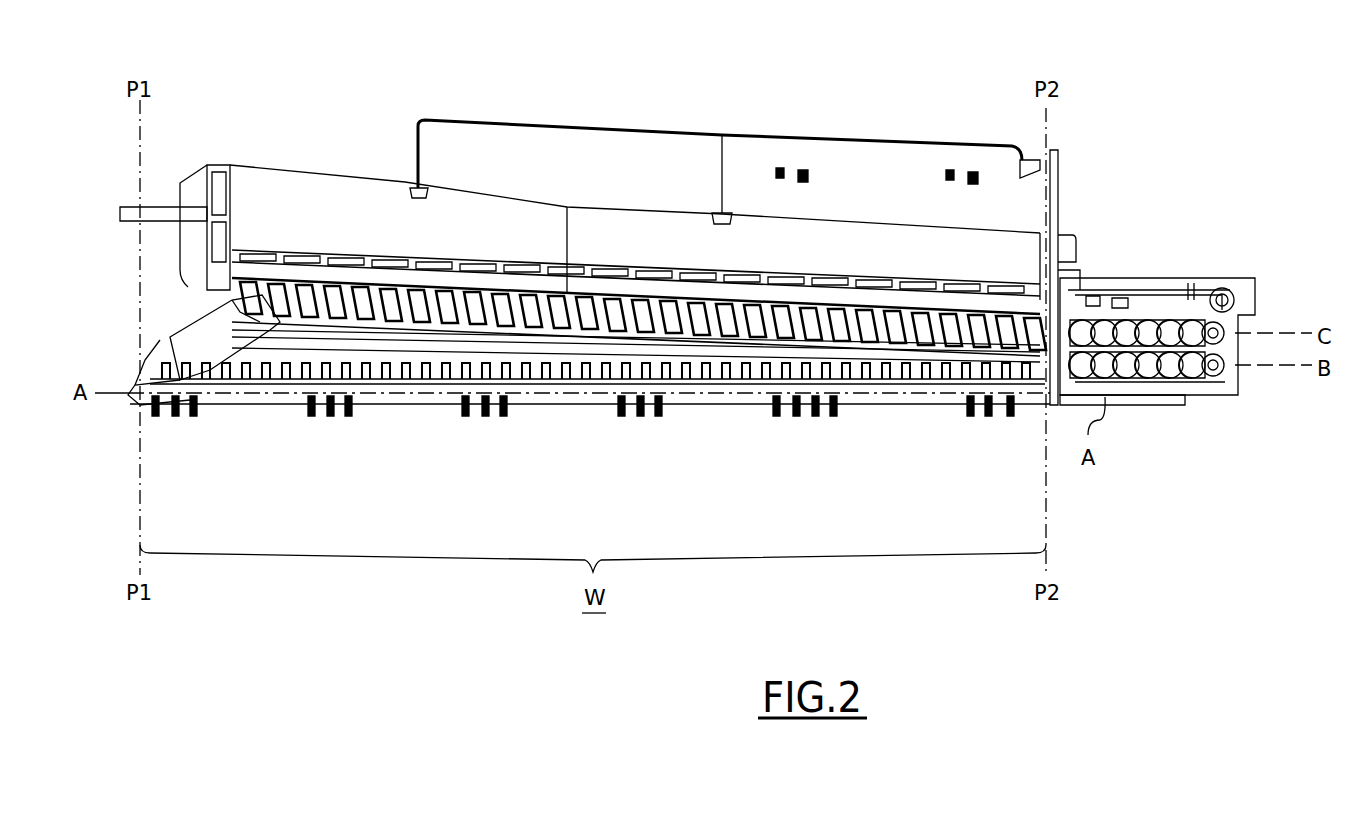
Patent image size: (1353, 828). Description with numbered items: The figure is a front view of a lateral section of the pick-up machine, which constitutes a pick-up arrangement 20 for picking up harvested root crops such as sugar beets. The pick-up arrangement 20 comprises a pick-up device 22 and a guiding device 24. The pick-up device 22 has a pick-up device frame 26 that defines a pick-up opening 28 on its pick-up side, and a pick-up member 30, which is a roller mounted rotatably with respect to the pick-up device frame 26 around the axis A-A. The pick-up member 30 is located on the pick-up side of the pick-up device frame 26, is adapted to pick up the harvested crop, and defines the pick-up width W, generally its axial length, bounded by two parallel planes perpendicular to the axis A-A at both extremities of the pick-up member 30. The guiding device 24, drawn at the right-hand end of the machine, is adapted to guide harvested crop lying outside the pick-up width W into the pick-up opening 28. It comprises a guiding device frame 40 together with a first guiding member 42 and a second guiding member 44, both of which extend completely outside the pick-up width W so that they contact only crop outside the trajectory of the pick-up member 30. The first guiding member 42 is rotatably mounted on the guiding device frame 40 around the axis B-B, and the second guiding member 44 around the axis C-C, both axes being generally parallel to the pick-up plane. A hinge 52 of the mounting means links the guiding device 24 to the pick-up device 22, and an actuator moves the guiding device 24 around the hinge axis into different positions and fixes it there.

The pick-up arrangement 20 is at (630, 95).
The pick-up device 22 is at (358, 172).
The guiding device 24 is at (1130, 262).
The pick-up device frame 26 is at (170, 337).
The pick-up opening 28 is at (562, 412).
The pick-up member 30 is at (730, 397).
The guiding device frame 40 is at (1137, 290).
The first guiding member 42 is at (1172, 380).
The second guiding member 44 is at (1158, 330).
The hinge 52 is at (1062, 258).